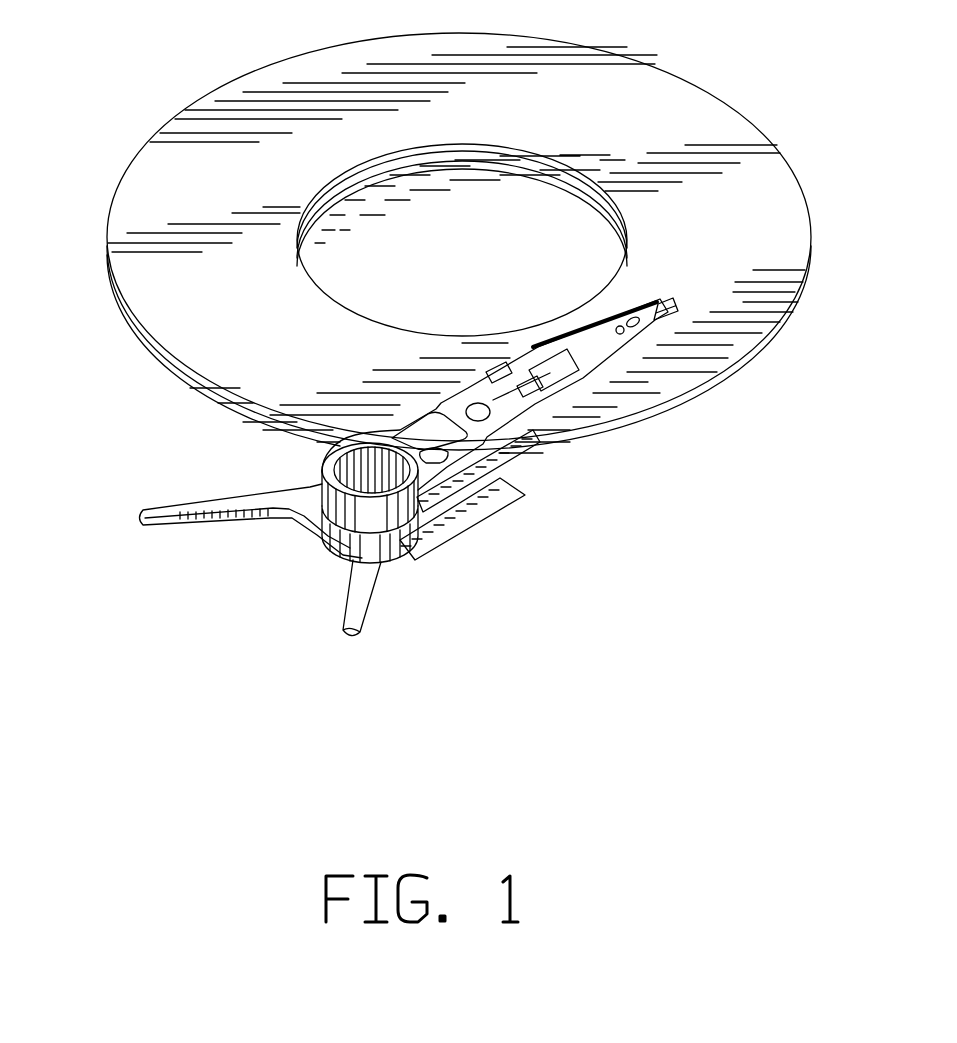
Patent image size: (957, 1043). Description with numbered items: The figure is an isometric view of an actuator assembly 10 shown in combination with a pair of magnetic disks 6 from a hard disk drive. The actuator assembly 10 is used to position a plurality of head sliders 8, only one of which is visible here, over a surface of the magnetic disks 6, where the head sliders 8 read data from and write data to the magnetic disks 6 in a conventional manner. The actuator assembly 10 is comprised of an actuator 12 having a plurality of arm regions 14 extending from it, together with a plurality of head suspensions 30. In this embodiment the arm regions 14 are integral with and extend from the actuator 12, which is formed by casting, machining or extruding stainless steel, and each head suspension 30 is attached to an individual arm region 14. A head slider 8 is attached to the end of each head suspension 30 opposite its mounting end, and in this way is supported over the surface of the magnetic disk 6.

The magnetic disk 6 is at (780, 323).
The head slider 8 is at (672, 300).
The actuator assembly 10 is at (437, 330).
The actuator 12 is at (396, 562).
The arm region 14 is at (581, 290).
The head suspension 30 is at (623, 350).